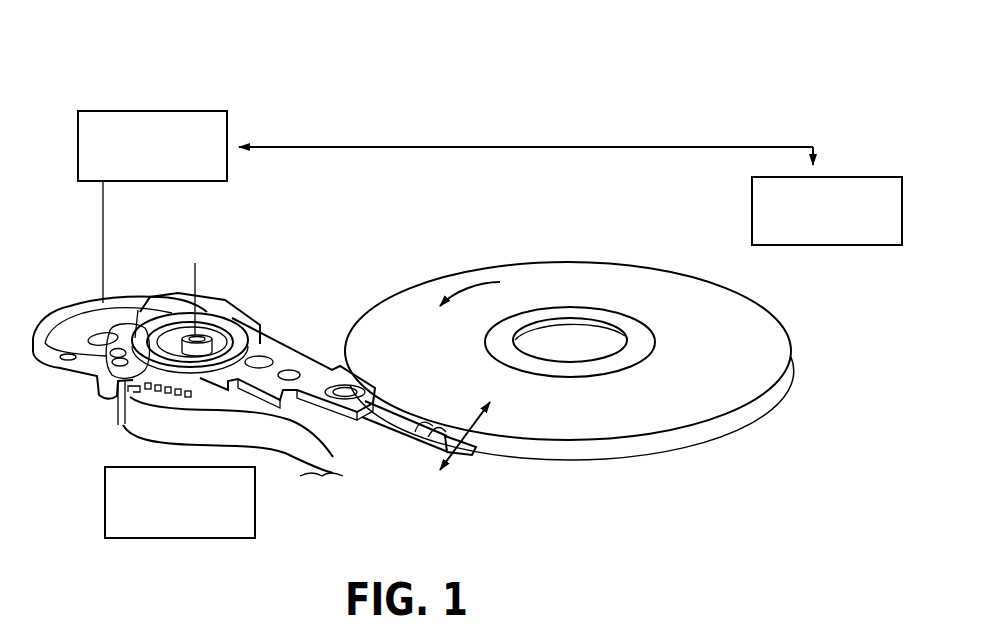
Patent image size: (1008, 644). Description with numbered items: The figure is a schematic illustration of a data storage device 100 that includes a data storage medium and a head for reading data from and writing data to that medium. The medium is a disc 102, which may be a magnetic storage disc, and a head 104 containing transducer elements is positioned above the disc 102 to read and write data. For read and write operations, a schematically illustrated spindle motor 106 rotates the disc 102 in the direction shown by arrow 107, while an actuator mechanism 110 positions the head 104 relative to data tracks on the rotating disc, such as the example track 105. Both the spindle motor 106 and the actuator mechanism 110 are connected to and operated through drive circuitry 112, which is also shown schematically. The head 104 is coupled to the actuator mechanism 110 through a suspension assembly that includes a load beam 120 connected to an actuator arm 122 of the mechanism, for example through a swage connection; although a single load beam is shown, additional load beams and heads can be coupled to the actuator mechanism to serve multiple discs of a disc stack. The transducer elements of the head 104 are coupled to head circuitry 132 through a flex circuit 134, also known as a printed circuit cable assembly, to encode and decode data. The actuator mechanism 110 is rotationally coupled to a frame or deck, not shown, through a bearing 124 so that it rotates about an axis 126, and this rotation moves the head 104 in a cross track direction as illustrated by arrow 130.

The data storage device 100 is at (713, 101).
The disc 102 is at (670, 293).
The head 104 is at (477, 447).
The track 105 is at (637, 364).
The spindle motor 106 is at (867, 176).
The arrow 107 is at (463, 293).
The actuator mechanism 110 is at (215, 291).
The drive circuitry 112 is at (197, 110).
The load beam 120 is at (370, 410).
The actuator arm 122 is at (295, 335).
The bearing 124 is at (190, 337).
The axis 126 is at (193, 283).
The arrow 130 is at (478, 423).
The head circuitry 132 is at (105, 500).
The flex circuit 134 is at (177, 467).